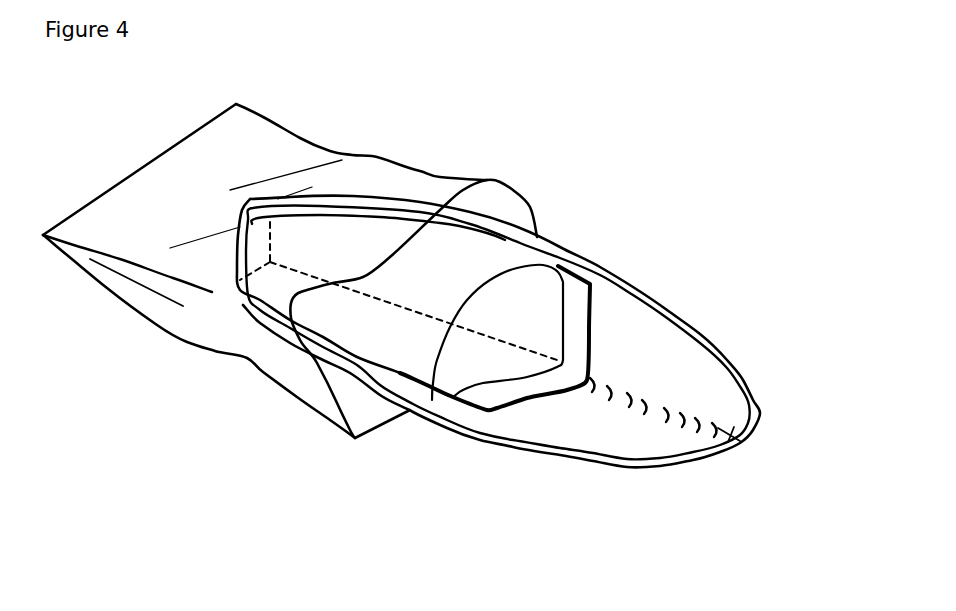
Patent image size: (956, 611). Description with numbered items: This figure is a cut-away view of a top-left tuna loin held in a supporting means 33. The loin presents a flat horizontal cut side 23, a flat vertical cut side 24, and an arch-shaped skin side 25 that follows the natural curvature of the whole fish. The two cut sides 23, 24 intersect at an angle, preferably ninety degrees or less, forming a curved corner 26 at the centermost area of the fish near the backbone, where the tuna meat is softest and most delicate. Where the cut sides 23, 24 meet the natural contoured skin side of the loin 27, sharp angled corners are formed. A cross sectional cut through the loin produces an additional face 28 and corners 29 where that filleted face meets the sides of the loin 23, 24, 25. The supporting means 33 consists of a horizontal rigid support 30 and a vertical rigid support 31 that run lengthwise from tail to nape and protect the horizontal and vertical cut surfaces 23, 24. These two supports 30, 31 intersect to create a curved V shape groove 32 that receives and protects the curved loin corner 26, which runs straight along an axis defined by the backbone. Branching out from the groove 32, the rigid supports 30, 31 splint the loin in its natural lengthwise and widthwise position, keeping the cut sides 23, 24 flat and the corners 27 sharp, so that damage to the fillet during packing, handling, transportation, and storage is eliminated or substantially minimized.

The flat horizontal cut side 23 is at (402, 367).
The flat vertical cut side 24 is at (510, 250).
The arch-shaped skin side 25 is at (440, 287).
The curved corner 26 is at (362, 310).
The natural contoured skin side of the loin 27 is at (307, 237).
The face 28 is at (497, 332).
The corner 29 is at (573, 270).
The horizontal rigid support 30 is at (646, 407).
The vertical rigid support 31 is at (452, 286).
The curved V shape groove 32 is at (745, 441).
The supporting means 33 is at (737, 363).